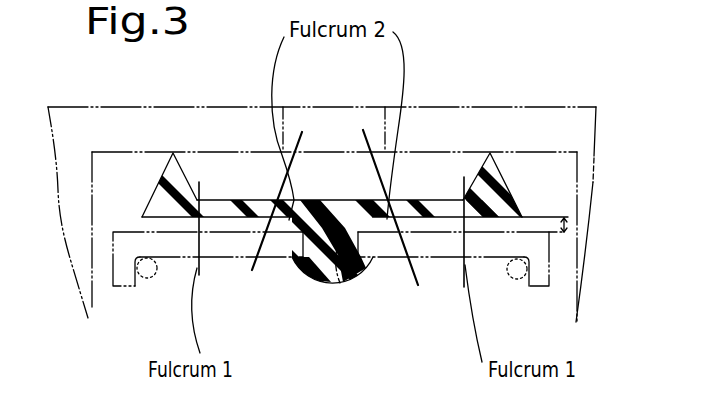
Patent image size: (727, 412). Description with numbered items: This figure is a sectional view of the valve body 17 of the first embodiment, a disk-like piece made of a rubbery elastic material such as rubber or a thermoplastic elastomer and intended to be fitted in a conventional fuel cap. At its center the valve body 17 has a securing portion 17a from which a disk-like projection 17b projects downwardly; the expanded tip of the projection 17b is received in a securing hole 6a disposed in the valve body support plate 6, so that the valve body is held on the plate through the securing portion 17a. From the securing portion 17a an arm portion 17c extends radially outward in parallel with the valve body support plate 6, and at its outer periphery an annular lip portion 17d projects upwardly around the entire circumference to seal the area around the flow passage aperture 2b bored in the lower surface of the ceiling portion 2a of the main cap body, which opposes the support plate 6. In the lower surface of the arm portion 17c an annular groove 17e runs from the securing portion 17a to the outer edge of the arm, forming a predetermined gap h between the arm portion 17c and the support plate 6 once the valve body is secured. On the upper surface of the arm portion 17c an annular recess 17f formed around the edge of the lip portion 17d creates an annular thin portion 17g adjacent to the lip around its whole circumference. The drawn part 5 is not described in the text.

The ceiling portion 2a is at (452, 127).
The flow passage aperture 2b is at (333, 127).
The frame member 5 is at (511, 279).
The valve body support plate 6 is at (433, 250).
The securing hole 6a is at (343, 284).
The valve body 17 is at (509, 173).
The securing portion 17a is at (330, 220).
The projection 17b is at (313, 276).
The arm portion 17c is at (232, 206).
The annular lip portion 17d is at (491, 155).
The annular groove 17e is at (393, 224).
The annular recess 17f is at (199, 182).
The annular thin portion 17g is at (197, 218).
The gap h is at (562, 226).